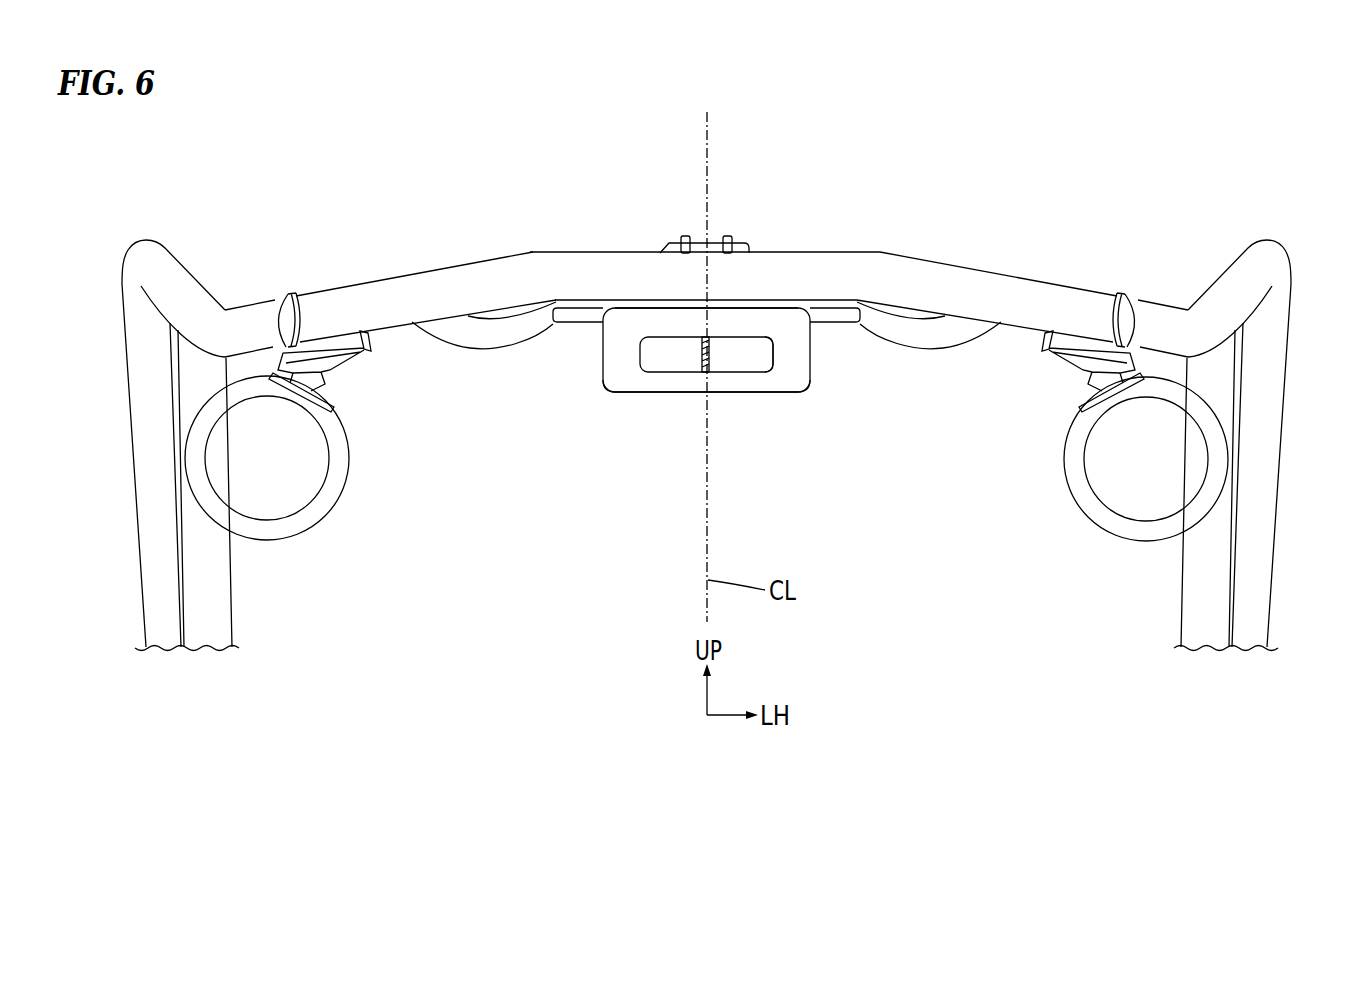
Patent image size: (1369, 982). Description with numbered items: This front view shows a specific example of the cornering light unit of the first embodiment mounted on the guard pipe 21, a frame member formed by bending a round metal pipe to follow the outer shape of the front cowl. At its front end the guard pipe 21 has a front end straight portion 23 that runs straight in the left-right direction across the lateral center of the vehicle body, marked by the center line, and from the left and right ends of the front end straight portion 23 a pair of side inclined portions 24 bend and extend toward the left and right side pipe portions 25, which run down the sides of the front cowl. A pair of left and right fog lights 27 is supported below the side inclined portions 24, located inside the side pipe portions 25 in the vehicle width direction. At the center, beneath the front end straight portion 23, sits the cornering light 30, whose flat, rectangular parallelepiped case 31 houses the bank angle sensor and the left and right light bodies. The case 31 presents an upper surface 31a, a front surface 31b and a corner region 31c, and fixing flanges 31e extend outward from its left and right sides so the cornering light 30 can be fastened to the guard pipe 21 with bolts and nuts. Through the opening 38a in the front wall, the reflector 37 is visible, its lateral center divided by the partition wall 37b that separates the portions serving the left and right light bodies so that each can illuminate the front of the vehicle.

The guard pipe 21 is at (1270, 236).
The front end straight portion 23 is at (827, 262).
The side inclined portions 24 is at (382, 288).
The side pipe portions 25 is at (198, 573).
The fog lights 27 is at (286, 497).
The cornering light 30 is at (706, 362).
The case 31 is at (643, 393).
The upper surface 31a is at (645, 305).
The front surface 31b is at (788, 384).
The corner portion of bracket 31c is at (604, 390).
The fixing flanges 31e is at (567, 323).
The reflector 37 is at (740, 363).
The partition wall 37b is at (709, 357).
The opening 38a is at (768, 357).